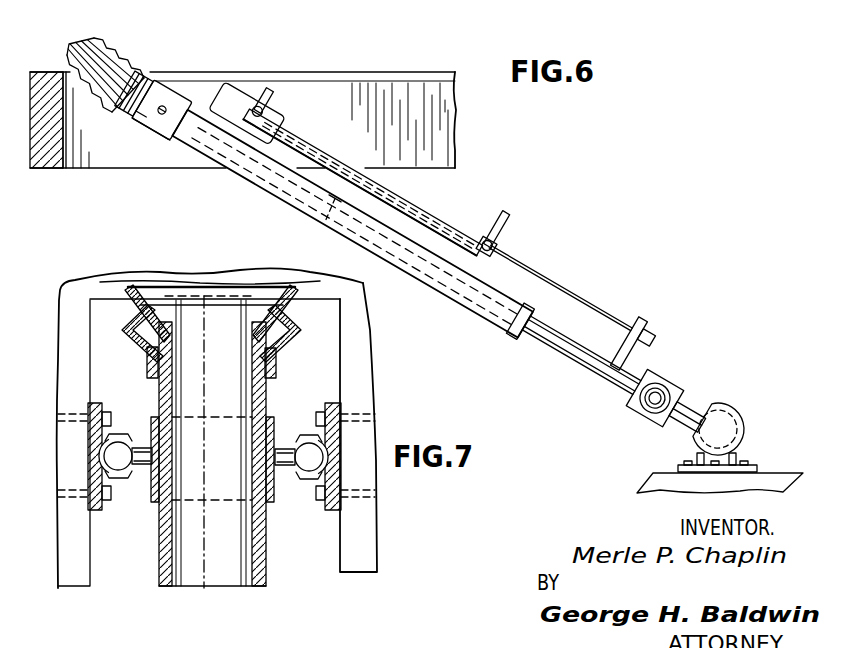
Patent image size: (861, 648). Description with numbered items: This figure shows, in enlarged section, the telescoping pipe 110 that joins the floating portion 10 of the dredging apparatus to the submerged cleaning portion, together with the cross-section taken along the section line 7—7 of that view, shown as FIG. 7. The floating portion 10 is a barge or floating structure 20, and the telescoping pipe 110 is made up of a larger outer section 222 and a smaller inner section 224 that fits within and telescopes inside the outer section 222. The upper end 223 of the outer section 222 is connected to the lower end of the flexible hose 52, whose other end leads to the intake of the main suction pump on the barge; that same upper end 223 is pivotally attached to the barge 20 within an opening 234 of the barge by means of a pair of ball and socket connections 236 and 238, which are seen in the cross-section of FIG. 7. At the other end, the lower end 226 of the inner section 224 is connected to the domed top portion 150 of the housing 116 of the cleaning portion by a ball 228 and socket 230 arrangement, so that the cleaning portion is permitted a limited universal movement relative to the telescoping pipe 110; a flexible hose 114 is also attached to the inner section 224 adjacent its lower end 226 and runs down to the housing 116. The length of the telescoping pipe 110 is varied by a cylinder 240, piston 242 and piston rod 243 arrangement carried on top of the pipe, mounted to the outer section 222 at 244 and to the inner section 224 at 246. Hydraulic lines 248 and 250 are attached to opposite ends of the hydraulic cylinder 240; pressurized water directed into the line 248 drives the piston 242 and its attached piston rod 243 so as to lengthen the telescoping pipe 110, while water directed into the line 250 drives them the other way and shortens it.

In FIG. 6, the first portion 10 is at (404, 67).
In FIG. 6, the barge 20 is at (46, 72).
In FIG. 7, the barge 20 is at (80, 583).
In FIG. 6, the flexible hose 52 is at (105, 44).
In FIG. 7, the flexible hose 52 is at (138, 332).
In FIG. 6, the collar (section line 7-7) 7 is at (136, 80).
In FIG. 6, the upper end 223 is at (158, 84).
In FIG. 7, the upper end 223 is at (158, 406).
In FIG. 6, the ball and socket connection 236 is at (150, 130).
In FIG. 7, the ball and socket connection 236 is at (117, 480).
In FIG. 6, the opening 234 is at (108, 155).
In FIG. 7, the opening 234 is at (340, 550).
In FIG. 6, the larger outer section 222 is at (243, 177).
In FIG. 7, the larger outer section 222 is at (268, 568).
In FIG. 6, the telescoping pipe 110 is at (505, 332).
In FIG. 6, the smaller inner section 224 is at (580, 366).
In FIG. 6, the mounting point on section 224 246 is at (645, 332).
In FIG. 6, the flexible hose 114 is at (642, 402).
In FIG. 6, the lower end 226 is at (690, 405).
In FIG. 6, the ball 228 is at (735, 432).
In FIG. 6, the socket 230 is at (725, 407).
In FIG. 6, the domed top portion 150 is at (670, 472).
In FIG. 6, the housing 116 is at (650, 488).
In FIG. 6, the mounting point on section 222 244 is at (230, 90).
In FIG. 6, the hydraulic cylinder 240 is at (290, 130).
In FIG. 6, the piston 242 is at (318, 148).
In FIG. 6, the hydraulic line 248 is at (272, 92).
In FIG. 6, the hydraulic line 250 is at (502, 213).
In FIG. 6, the piston rod 243 is at (540, 280).
In FIG. 7, the ball and socket connection 238 is at (300, 440).